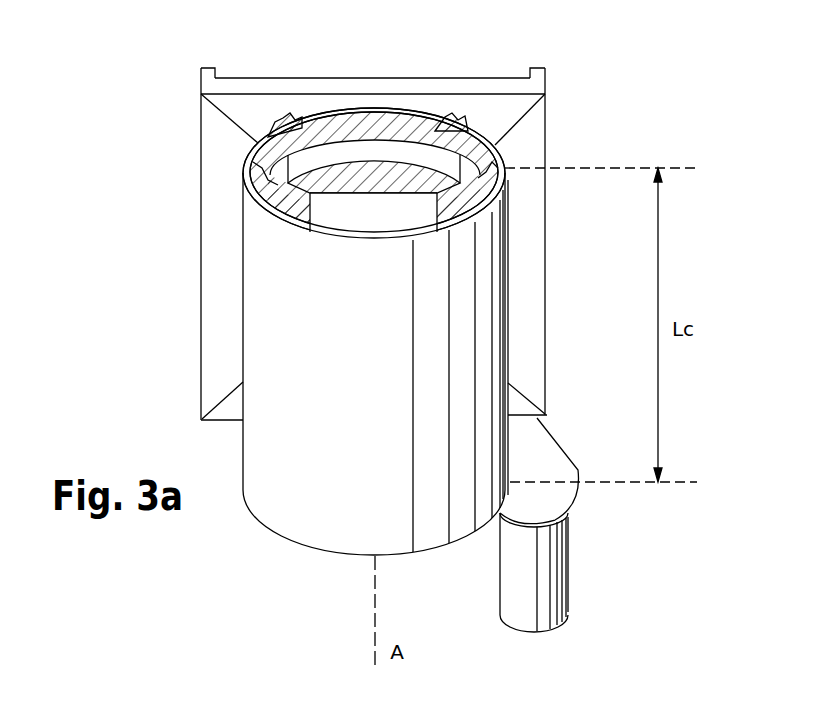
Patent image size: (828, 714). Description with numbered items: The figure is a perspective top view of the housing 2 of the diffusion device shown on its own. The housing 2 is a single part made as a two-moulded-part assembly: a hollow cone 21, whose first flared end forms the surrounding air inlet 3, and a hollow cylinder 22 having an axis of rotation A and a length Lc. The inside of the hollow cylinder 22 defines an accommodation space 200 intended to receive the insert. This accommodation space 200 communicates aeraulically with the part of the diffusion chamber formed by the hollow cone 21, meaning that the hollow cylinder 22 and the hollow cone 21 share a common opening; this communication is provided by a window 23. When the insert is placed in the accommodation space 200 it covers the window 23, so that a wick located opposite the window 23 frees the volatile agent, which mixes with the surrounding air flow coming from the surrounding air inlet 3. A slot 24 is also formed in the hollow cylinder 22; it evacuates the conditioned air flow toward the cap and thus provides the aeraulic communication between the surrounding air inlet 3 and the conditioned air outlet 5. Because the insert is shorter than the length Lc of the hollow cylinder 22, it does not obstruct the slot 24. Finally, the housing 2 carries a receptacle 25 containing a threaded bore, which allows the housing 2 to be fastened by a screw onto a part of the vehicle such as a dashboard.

The housing 2 is at (168, 319).
The surrounding air inlet 3 is at (319, 66).
The conditioned air outlet 5 is at (270, 180).
The hollow cone 21 is at (527, 300).
The hollow cylinder 22 is at (307, 498).
The window 23 is at (348, 218).
The slot 24 is at (410, 157).
The receptacle 25 is at (553, 578).
The accommodation space 200 is at (257, 131).